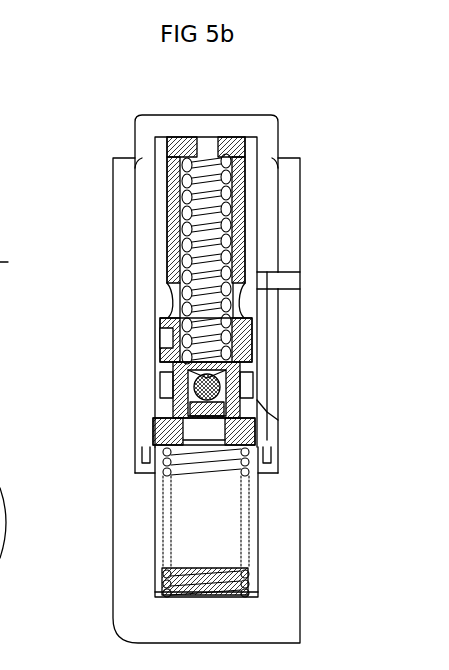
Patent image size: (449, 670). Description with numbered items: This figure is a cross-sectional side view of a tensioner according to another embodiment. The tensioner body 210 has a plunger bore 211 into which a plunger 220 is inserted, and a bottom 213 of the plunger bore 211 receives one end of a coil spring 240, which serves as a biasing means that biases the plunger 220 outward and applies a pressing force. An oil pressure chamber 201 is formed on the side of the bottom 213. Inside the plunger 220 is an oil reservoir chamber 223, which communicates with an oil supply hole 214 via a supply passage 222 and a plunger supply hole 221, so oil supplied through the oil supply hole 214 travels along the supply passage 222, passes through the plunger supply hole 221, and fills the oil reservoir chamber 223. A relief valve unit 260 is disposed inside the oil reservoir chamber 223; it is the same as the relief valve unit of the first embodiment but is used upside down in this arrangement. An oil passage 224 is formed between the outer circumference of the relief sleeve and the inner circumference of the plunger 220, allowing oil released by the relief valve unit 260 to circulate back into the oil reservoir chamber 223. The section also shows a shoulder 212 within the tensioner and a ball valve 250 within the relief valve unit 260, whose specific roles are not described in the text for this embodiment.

The oil pressure chamber 201 is at (214, 503).
The tensioner body 210 is at (297, 210).
The plunger bore 211 is at (131, 157).
The cap inner shoulder 212 is at (263, 400).
The bottom 213 is at (195, 575).
The oil supply hole 214 is at (300, 282).
The plunger 220 is at (233, 116).
The plunger supply hole 221 is at (265, 284).
The supply passage 222 is at (274, 354).
The oil reservoir chamber 223 is at (170, 292).
The oil passage 224 is at (158, 237).
The coil spring 240 is at (250, 578).
The ball valve 250 is at (178, 408).
The relief valve unit 260 is at (160, 333).